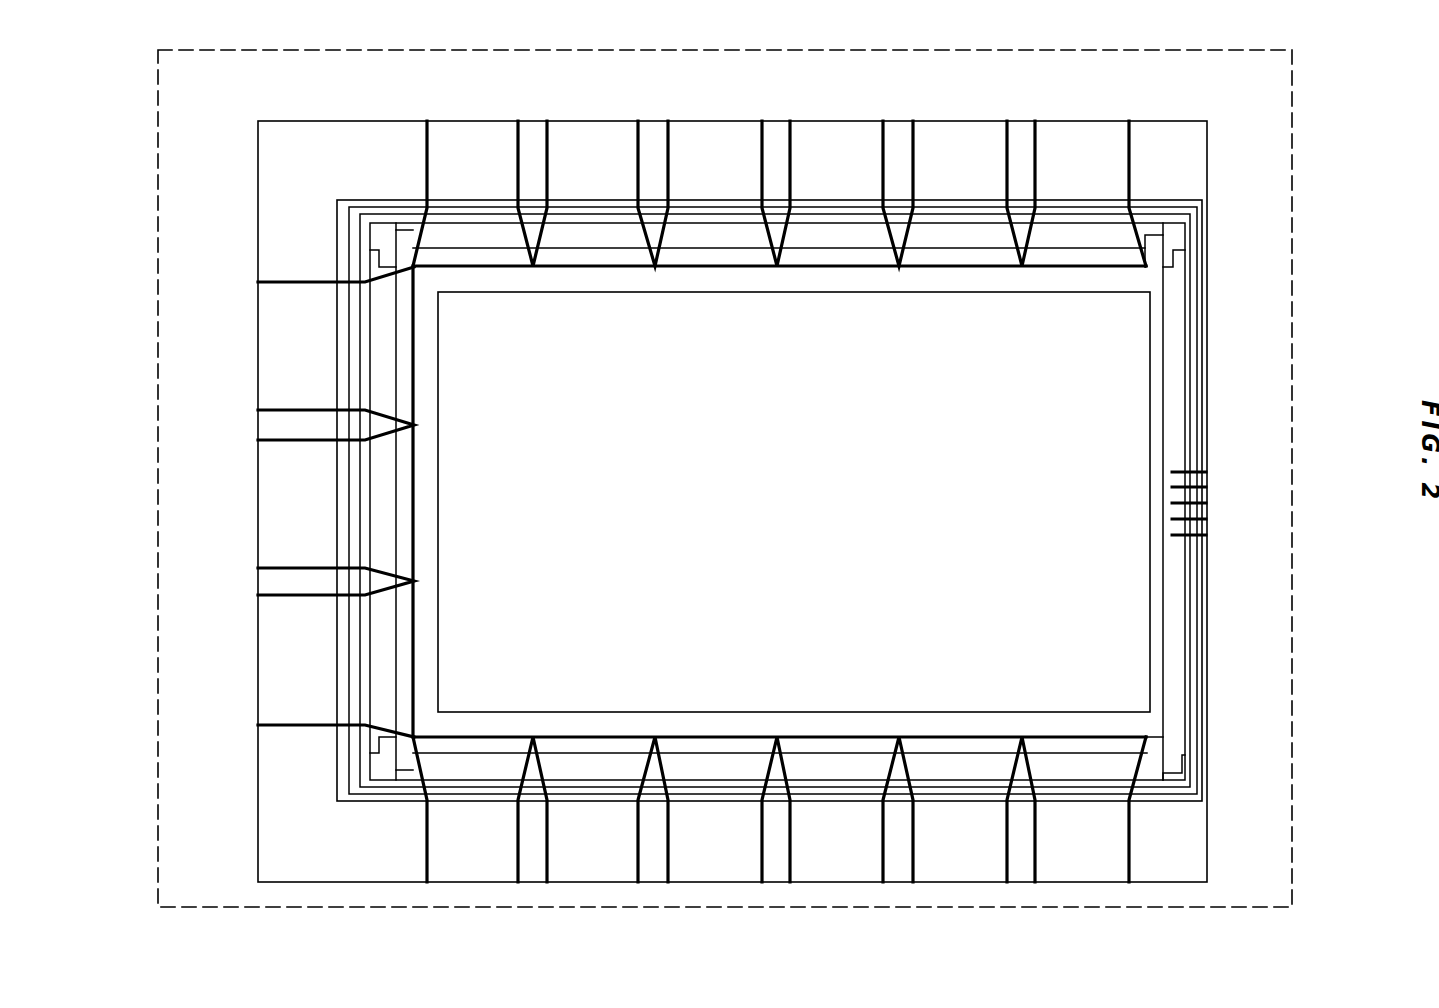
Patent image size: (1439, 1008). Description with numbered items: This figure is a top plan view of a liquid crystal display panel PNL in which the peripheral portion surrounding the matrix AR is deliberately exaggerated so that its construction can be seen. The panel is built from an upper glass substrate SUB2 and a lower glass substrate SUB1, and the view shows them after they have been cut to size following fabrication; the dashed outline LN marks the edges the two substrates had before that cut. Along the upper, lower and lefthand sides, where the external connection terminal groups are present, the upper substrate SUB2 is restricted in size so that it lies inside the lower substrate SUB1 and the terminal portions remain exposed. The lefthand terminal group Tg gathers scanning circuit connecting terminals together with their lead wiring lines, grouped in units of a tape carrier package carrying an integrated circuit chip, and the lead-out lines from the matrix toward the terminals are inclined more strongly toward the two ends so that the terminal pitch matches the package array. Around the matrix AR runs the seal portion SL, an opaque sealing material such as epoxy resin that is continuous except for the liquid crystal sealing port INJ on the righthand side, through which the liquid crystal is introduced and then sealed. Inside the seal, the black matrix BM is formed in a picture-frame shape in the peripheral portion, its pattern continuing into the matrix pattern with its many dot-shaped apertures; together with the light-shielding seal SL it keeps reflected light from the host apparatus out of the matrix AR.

The substrate edges before cut LN is at (160, 512).
The liquid crystal display panel PNL is at (832, 108).
The lower transparent glass substrate SUB1 is at (258, 236).
The upper transparent glass substrate SUB2 is at (336, 232).
The seal portion SL is at (720, 202).
The black matrix BM is at (888, 294).
The matrix AR is at (794, 502).
The external connection terminal group Tg is at (270, 355).
The liquid crystal sealing port INJ is at (1210, 500).